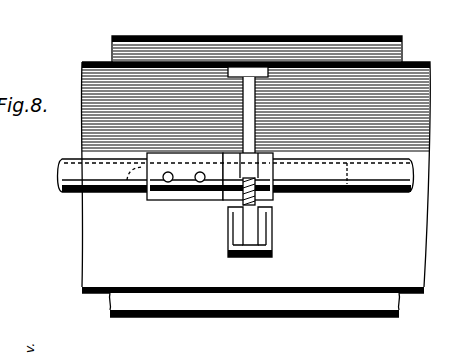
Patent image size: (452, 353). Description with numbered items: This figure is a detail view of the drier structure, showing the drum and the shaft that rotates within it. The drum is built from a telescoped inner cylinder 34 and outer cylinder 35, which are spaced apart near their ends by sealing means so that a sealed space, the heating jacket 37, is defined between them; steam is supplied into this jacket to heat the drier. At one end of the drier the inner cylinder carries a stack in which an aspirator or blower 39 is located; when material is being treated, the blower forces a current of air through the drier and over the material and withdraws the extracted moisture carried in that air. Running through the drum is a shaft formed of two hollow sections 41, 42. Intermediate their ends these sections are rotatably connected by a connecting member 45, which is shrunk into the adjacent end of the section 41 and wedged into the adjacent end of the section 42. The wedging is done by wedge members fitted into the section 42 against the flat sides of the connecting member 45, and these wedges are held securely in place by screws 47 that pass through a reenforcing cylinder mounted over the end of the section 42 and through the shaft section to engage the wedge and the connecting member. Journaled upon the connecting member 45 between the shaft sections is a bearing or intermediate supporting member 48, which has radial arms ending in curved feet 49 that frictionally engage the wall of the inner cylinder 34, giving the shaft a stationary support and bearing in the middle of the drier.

The inner cylinder 34 is at (344, 287).
The outer cylinder 35 is at (326, 318).
The heating jacket 37 is at (283, 298).
The aspirator or blower 39 is at (210, 166).
The hollow section 41 is at (380, 180).
The hollow section 42 is at (122, 186).
The connecting member 45 is at (323, 173).
The screws 47 is at (170, 172).
The intermediate supporting member 48 is at (262, 156).
The curved feet 49 is at (259, 237).